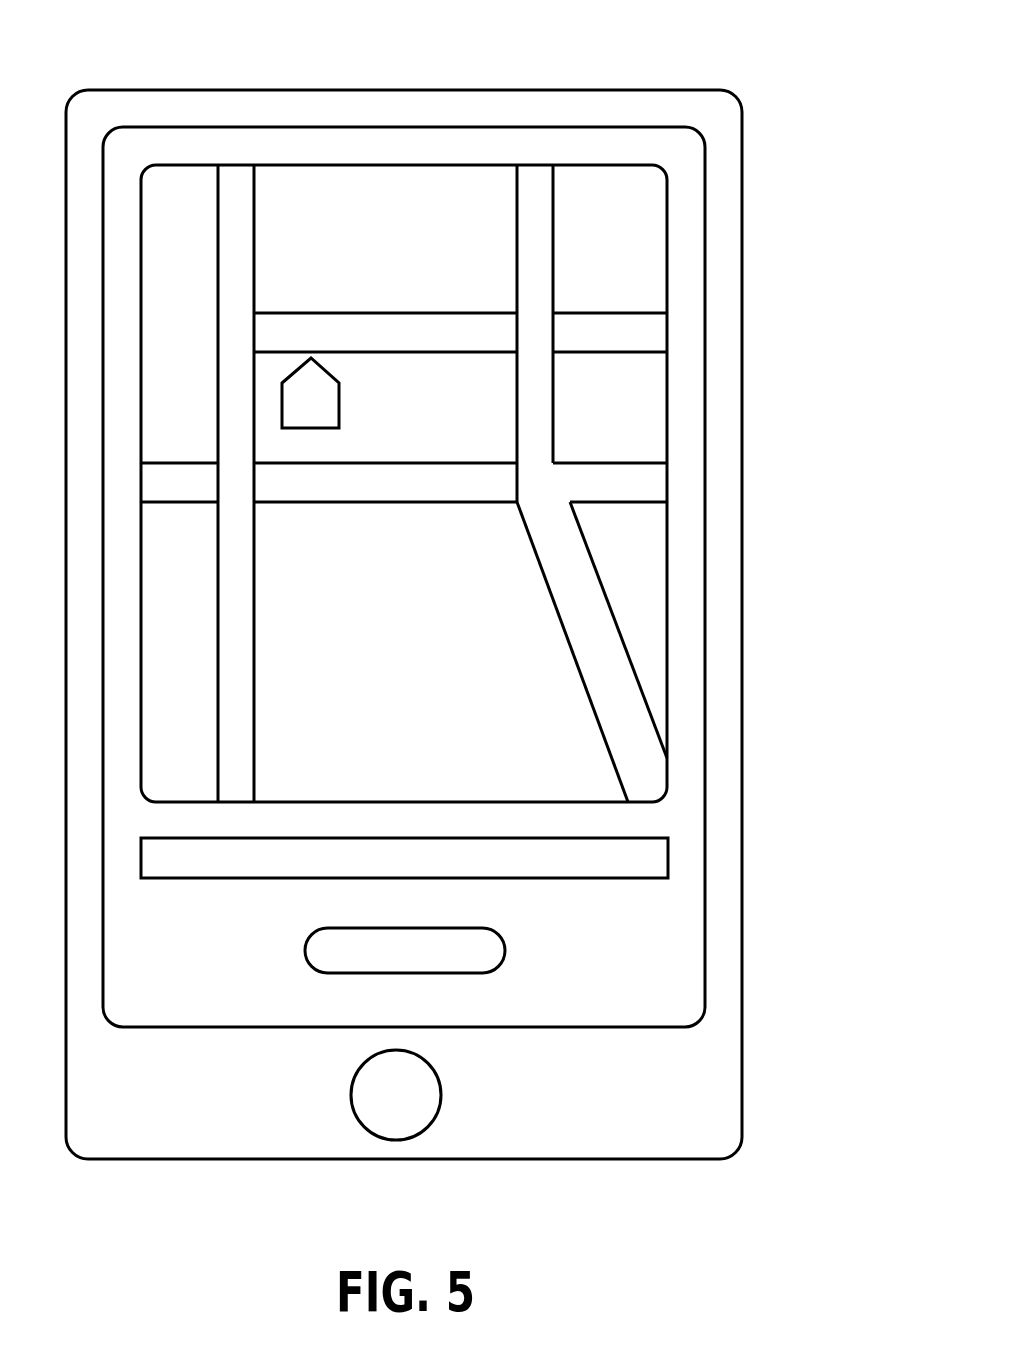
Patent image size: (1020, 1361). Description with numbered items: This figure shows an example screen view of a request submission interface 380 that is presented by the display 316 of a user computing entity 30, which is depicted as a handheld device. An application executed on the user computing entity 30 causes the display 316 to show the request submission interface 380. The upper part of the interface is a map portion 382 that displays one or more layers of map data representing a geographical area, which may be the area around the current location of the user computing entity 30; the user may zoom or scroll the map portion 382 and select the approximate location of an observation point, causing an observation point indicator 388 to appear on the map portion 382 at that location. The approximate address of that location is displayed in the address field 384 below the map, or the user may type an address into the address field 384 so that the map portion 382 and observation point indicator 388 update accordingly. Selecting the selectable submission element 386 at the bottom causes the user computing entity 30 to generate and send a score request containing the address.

The user computing entity 30 is at (466, 581).
The display 316 is at (466, 543).
The request submission interface 380 is at (466, 516).
The map portion 382 is at (505, 483).
The address field 384 is at (505, 815).
The selectable submission element 386 is at (587, 919).
The observation point indicator 388 is at (364, 393).